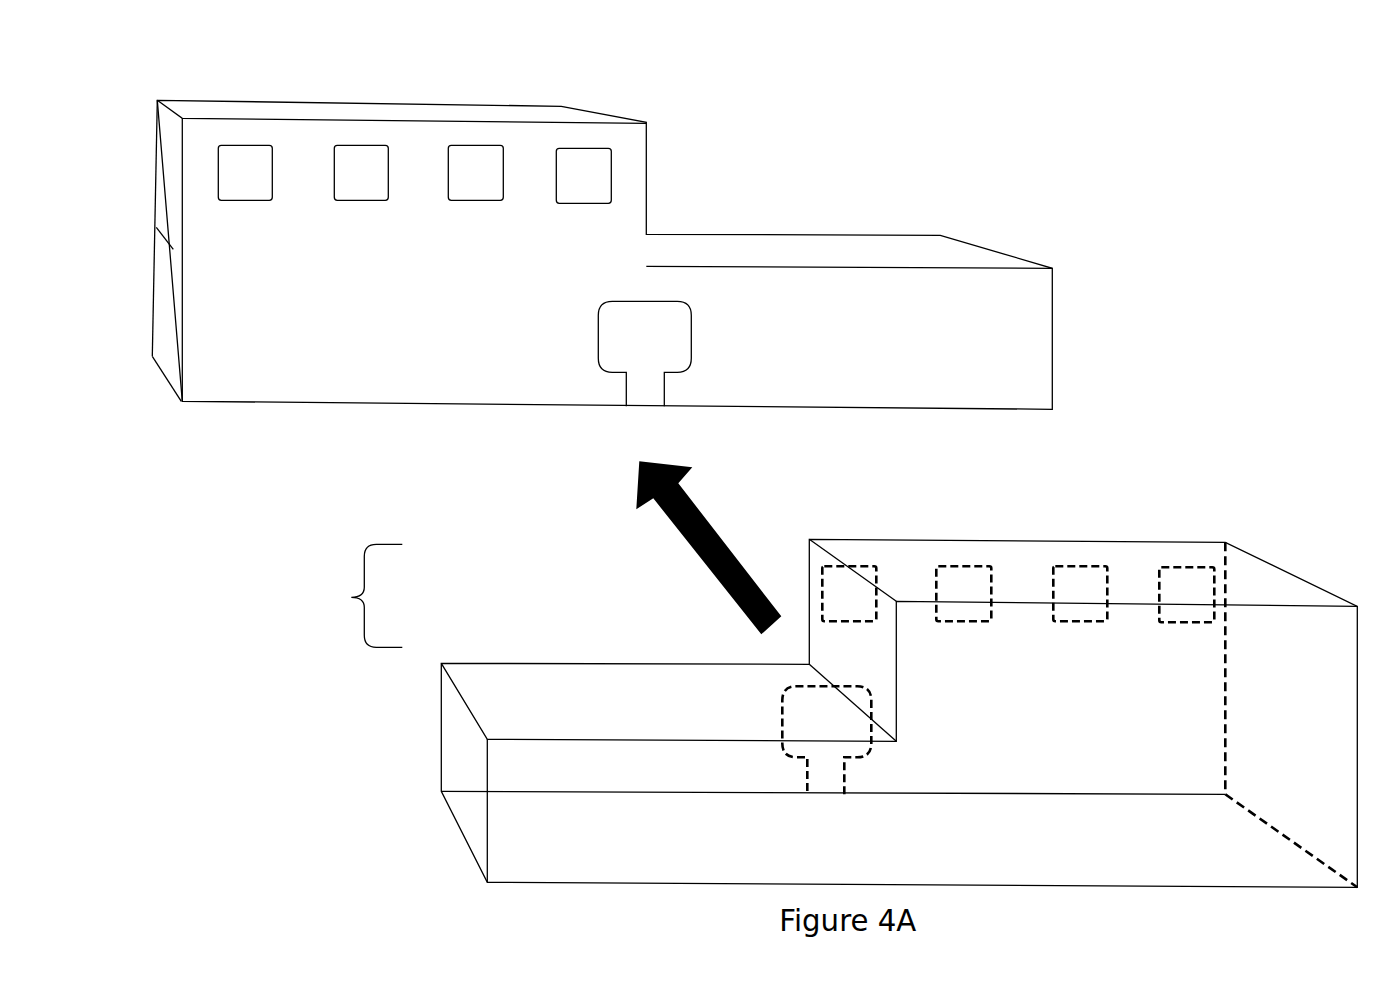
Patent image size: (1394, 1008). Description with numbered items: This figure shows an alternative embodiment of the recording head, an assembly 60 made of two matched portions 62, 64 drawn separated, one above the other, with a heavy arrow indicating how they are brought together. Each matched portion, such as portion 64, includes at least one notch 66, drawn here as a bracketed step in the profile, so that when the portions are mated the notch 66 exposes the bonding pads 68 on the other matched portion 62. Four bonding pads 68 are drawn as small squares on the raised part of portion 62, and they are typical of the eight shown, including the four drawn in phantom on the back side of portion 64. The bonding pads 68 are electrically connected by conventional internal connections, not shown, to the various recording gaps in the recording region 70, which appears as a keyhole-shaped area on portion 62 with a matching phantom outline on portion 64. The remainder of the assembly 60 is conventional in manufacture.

The assembly 60 is at (1298, 178).
The matched portion 62 is at (1007, 323).
The matched portion 64 is at (1268, 590).
The notch 66 is at (359, 595).
The bonding pads 68 is at (585, 149).
The recording region 70 is at (647, 300).